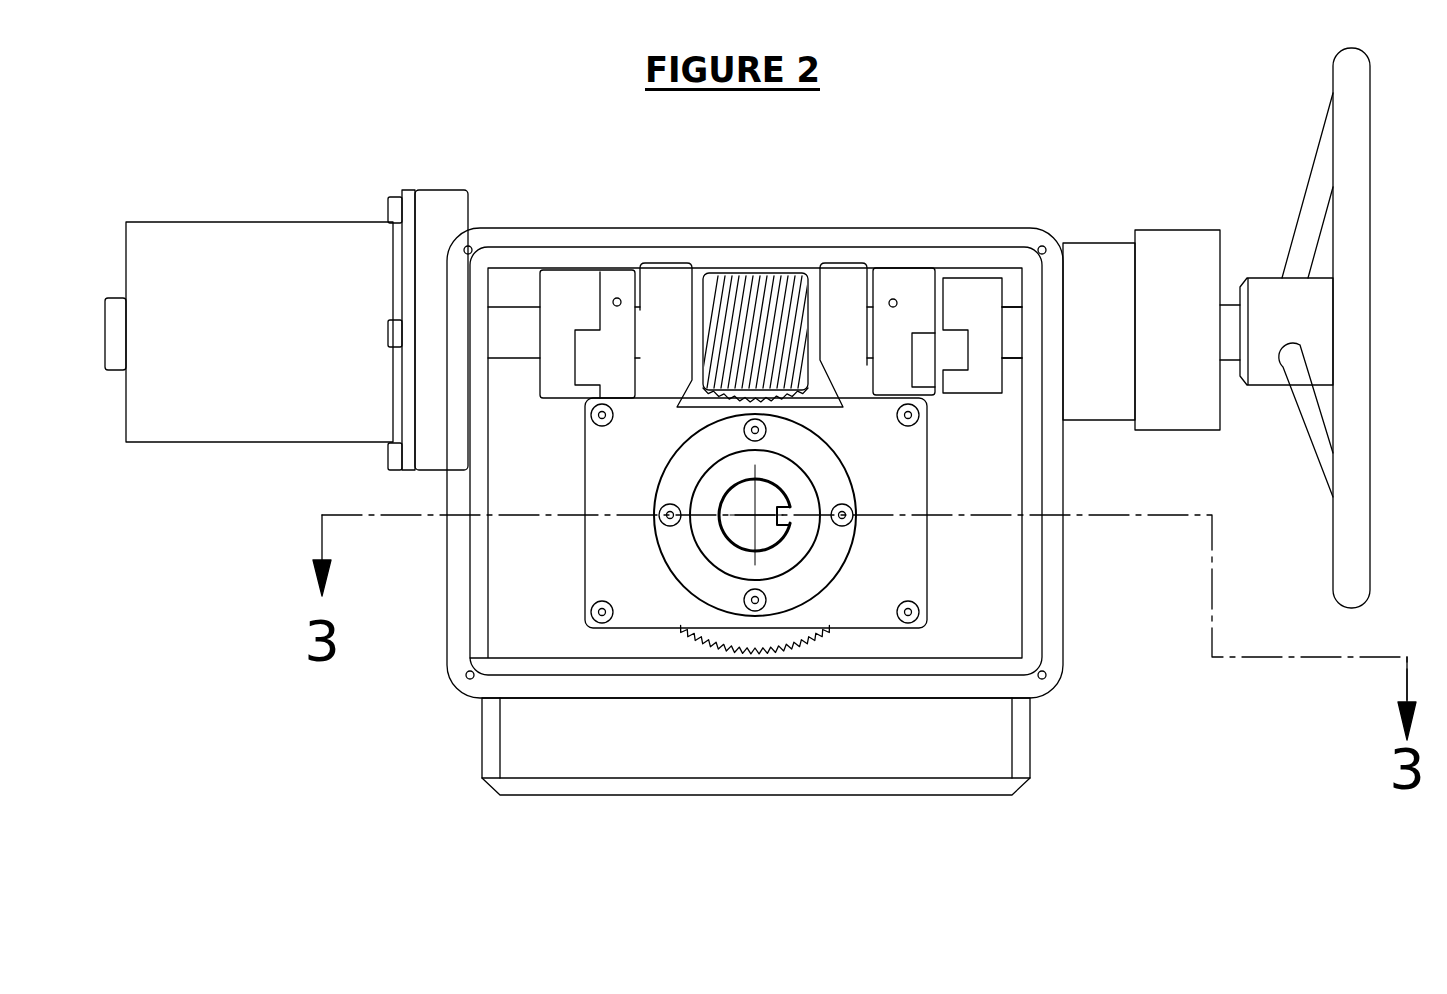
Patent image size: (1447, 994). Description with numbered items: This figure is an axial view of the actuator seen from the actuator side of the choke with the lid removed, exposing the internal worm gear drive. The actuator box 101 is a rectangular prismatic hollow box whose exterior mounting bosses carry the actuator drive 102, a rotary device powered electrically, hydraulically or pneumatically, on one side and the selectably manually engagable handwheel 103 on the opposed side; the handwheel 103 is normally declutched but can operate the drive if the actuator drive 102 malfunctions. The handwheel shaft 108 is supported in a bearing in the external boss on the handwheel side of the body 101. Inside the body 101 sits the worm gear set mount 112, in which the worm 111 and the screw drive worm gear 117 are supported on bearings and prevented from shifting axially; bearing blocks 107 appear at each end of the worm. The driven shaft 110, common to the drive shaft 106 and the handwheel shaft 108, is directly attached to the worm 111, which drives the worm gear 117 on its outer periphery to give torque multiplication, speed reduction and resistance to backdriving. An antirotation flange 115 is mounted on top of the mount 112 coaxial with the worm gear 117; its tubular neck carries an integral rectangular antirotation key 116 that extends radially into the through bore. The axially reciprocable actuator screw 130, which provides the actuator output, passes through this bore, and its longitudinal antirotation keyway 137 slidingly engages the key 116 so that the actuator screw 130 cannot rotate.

The actuator box 101 is at (967, 228).
The actuator drive 102 is at (287, 222).
The handwheel 103 is at (1333, 497).
The drive shaft 106 is at (498, 307).
The bearing blocks 107 is at (560, 272).
The handwheel shaft 108 is at (1015, 305).
The driven shaft 110 is at (812, 298).
The worm 111 is at (740, 273).
The worm gear set mount 112 is at (928, 492).
The antirotation flange 115 is at (848, 470).
The antirotation key 116 is at (788, 530).
The screw drive worm gear 117 is at (728, 650).
The actuator screw 130 is at (727, 542).
The antirotation keyway 137 is at (787, 513).